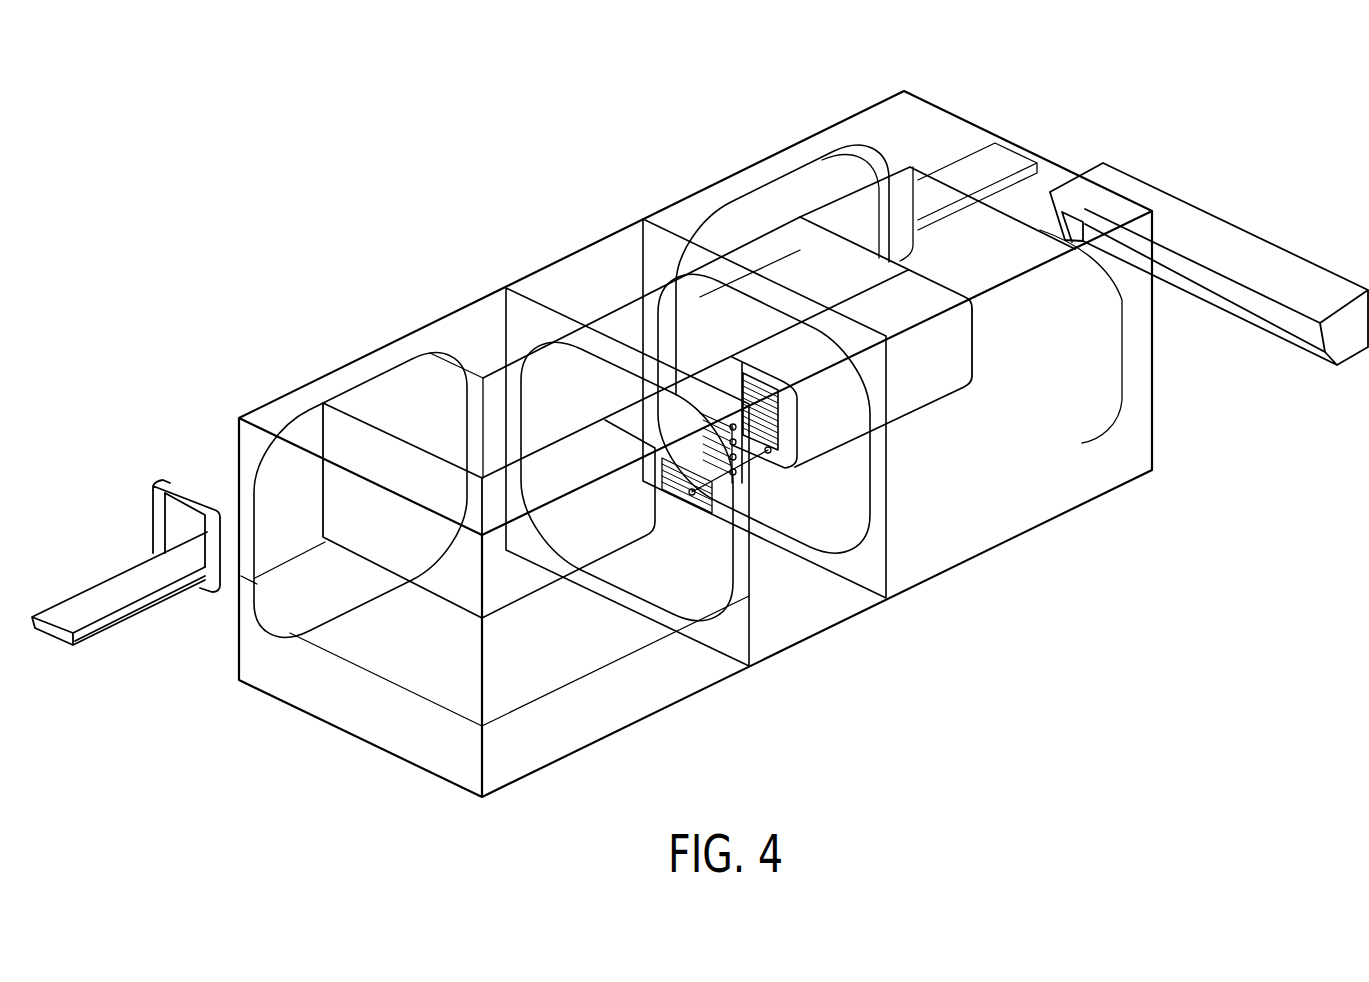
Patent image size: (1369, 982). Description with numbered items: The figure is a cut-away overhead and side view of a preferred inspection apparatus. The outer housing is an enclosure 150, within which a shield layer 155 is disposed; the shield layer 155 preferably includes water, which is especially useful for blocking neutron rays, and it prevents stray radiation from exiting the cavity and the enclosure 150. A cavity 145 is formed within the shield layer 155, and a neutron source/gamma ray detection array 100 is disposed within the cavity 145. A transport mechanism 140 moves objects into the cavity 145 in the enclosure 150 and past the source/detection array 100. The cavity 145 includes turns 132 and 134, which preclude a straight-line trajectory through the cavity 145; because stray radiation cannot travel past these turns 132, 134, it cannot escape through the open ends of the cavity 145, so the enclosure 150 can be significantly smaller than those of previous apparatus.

The neutron source/gamma ray detection array 100 is at (712, 368).
The turn 132 is at (437, 583).
The turn 134 is at (947, 365).
The transport mechanism 140 is at (102, 580).
The cavity 145 is at (183, 518).
The enclosure 150 is at (926, 111).
The shield layer 155 is at (1082, 410).